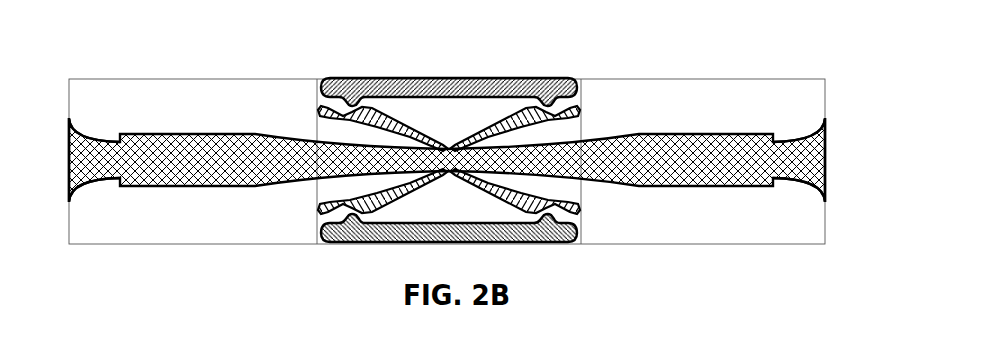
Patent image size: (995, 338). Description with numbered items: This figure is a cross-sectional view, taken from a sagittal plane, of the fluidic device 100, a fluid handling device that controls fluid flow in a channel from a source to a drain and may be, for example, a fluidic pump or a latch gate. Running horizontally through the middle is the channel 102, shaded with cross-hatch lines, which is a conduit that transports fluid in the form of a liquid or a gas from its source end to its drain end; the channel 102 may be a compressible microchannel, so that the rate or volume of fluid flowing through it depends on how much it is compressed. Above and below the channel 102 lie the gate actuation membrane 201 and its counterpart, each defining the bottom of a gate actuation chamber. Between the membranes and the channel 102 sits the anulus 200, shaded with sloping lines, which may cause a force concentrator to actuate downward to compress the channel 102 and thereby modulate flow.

The fluidic device 100 is at (149, 67).
The channel 102 is at (278, 188).
The gate actuation membrane 201 is at (518, 79).
The anulus 200 is at (501, 205).